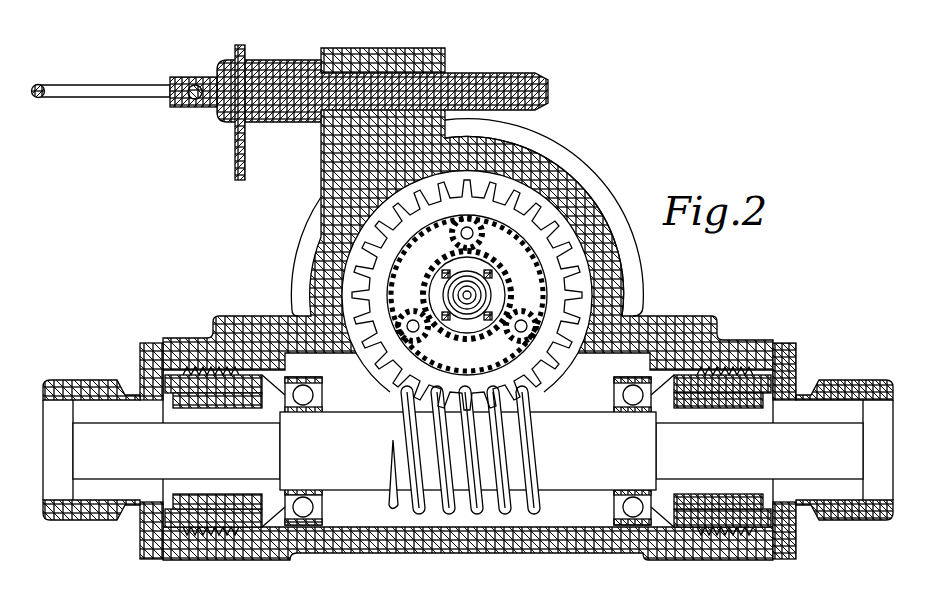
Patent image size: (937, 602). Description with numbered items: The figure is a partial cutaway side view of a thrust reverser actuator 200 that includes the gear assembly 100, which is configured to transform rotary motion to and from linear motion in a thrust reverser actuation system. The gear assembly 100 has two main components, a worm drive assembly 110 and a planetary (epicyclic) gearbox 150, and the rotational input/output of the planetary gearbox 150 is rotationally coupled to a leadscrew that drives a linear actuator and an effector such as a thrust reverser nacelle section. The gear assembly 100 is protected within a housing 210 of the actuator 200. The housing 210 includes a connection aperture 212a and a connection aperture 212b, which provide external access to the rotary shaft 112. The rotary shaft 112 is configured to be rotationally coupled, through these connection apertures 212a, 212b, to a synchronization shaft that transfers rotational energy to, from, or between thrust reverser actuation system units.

The gear assembly 100 is at (630, 157).
The worm drive assembly 110 is at (253, 368).
The rotary shaft 112 is at (105, 470).
The planetary gearbox 150 is at (353, 250).
The thrust reverser actuator 200 is at (137, 68).
The housing 210 is at (563, 170).
The connection aperture 212a is at (33, 417).
The connection aperture 212b is at (903, 417).